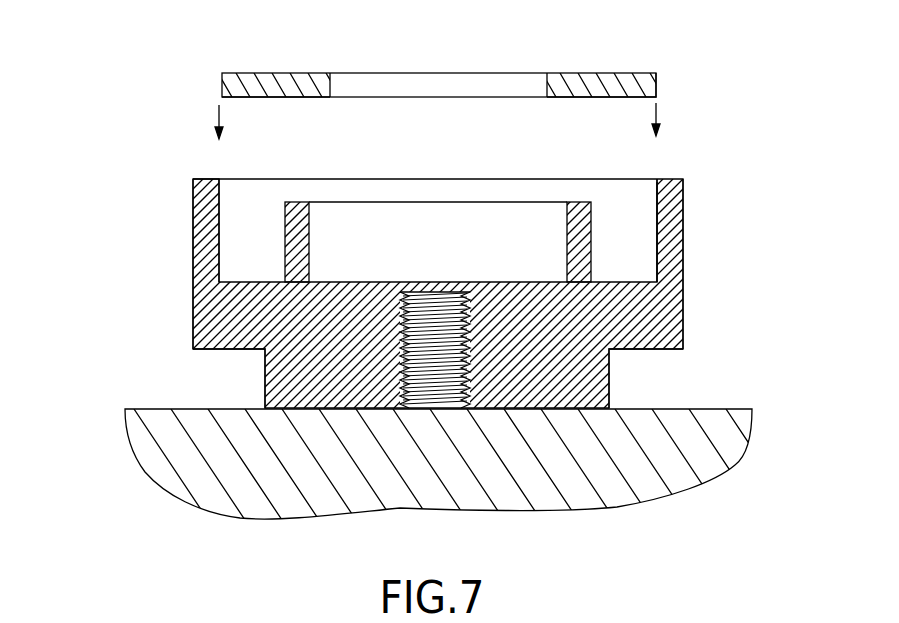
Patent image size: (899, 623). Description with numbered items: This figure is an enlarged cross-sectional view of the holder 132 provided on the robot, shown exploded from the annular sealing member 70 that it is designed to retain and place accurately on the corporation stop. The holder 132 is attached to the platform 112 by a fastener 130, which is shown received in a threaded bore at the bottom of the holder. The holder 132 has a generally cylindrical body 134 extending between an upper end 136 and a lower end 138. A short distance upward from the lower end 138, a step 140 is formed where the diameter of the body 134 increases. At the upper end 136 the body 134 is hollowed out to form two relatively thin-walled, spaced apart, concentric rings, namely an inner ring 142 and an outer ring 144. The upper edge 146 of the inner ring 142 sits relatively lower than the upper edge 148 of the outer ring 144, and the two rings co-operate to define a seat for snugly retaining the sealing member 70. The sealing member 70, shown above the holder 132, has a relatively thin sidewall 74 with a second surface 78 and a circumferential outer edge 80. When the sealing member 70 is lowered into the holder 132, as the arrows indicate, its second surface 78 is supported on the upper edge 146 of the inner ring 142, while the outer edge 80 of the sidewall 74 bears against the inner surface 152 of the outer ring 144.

The sealing member 70 is at (257, 73).
The sidewall 74 is at (296, 80).
The second surface 78 is at (260, 97).
The outer edge 80 is at (657, 80).
The platform 112 is at (735, 452).
The fastener 130 is at (470, 337).
The holder 132 is at (692, 33).
The body 134 is at (193, 262).
The upper end 136 is at (193, 186).
The lower end 138 is at (265, 402).
The step 140 is at (650, 350).
The inner ring 142 is at (567, 226).
The outer ring 144 is at (683, 207).
The upper edge of the inner ring 146 is at (296, 202).
The upper edge of the outer ring 148 is at (208, 180).
The inner surface of the outer ring 152 is at (657, 192).